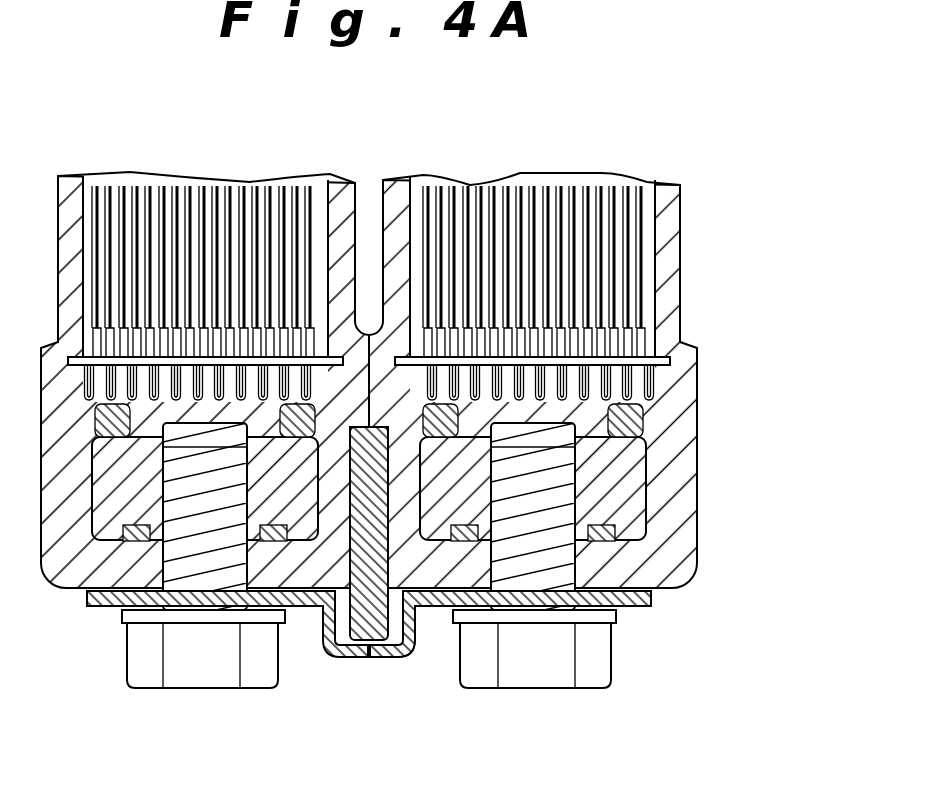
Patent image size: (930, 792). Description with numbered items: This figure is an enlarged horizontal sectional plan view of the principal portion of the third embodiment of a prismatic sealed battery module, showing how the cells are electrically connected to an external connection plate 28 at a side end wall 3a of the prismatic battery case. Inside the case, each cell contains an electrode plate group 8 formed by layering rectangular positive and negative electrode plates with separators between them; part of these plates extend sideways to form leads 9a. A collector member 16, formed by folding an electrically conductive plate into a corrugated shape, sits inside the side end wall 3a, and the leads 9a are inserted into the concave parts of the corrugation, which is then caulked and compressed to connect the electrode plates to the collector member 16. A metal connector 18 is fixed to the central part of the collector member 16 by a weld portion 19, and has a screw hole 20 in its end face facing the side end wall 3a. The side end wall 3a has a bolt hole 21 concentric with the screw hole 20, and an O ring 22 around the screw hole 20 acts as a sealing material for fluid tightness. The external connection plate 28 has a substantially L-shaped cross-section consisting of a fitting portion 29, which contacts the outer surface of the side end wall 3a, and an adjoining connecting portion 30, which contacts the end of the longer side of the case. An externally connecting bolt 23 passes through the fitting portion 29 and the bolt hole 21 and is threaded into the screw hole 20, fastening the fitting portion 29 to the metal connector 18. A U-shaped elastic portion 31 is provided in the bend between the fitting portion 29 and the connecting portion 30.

The electrode plate group 8 is at (597, 263).
The lead 9a is at (637, 358).
The collector member 16 is at (650, 375).
The weld portion 19 is at (628, 427).
The screw hole 20 is at (578, 490).
The metal connector 18 is at (627, 505).
The O ring 22 is at (643, 530).
The side end wall 3a is at (653, 567).
The bolt hole 21 is at (580, 568).
The fitting portion 29 is at (633, 613).
The externally connecting bolt 23 is at (535, 657).
The external connection plate 28 is at (430, 613).
The U-shaped elastic portion 31 is at (381, 658).
The connecting portion 30 is at (325, 653).